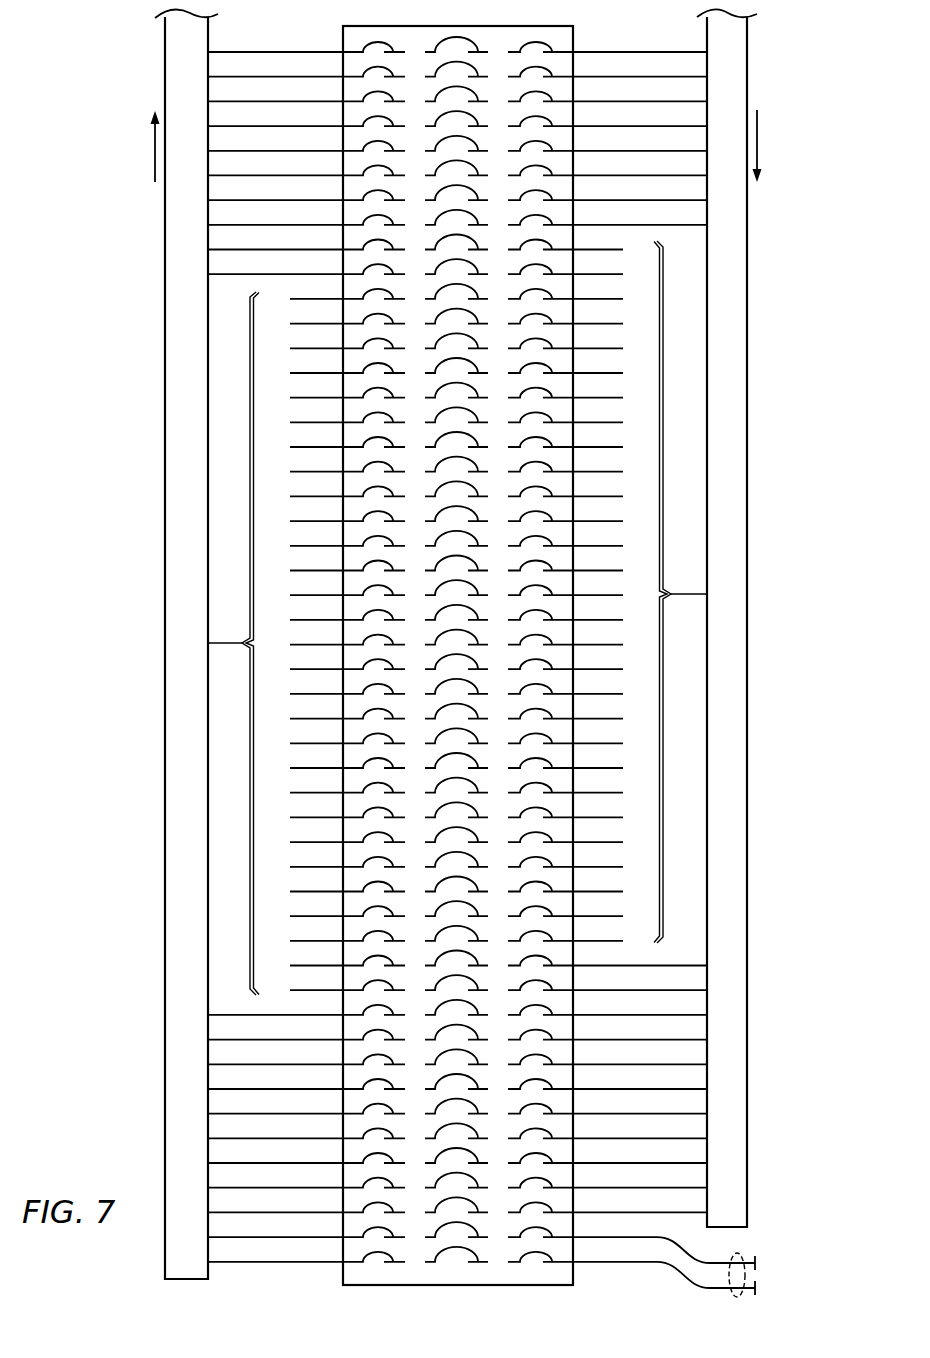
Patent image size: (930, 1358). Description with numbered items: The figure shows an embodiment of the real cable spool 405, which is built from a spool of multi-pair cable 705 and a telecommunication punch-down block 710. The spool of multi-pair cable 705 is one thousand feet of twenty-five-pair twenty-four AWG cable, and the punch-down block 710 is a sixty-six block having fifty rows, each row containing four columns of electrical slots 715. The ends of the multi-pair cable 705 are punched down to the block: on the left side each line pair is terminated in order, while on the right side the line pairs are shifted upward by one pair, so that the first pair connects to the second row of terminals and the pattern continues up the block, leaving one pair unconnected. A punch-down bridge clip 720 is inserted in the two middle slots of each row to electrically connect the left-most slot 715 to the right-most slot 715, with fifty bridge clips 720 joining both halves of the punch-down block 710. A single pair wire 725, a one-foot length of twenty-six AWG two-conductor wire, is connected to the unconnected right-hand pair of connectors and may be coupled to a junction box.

The real cable spool 405 is at (433, 664).
The spool of multi-pair cable 705 is at (165, 833).
The telecommunication punch-down block 710 is at (343, 1278).
The electrical slots 715 is at (388, 1264).
The punch-down bridge clip 720 is at (457, 1250).
The single pair wire 725 is at (745, 1273).